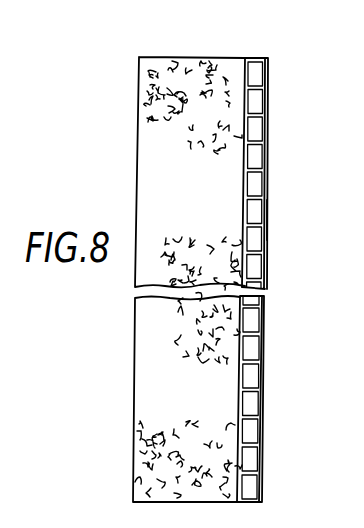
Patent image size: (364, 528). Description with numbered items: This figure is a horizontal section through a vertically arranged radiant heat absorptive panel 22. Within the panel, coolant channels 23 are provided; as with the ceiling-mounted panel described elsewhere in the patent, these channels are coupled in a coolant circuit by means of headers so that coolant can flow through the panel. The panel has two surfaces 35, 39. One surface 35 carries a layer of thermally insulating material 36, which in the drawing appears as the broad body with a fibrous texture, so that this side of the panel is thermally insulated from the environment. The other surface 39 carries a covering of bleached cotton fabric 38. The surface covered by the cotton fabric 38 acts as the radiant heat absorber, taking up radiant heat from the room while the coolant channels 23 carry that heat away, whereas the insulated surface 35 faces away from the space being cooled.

The radiant heat absorptive panel 22 is at (279, 259).
The coolant channels 23 is at (282, 280).
The panel surface 35 is at (229, 90).
The layer of thermally insulating material 36 is at (165, 65).
The covering of bleached cotton fabric 38 is at (268, 217).
The panel surface 39 is at (265, 80).